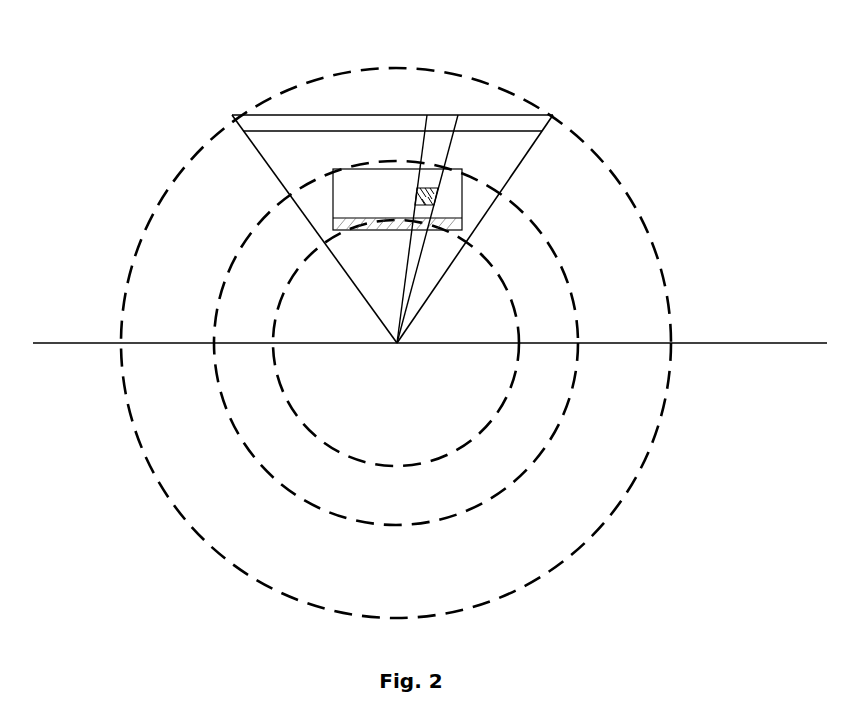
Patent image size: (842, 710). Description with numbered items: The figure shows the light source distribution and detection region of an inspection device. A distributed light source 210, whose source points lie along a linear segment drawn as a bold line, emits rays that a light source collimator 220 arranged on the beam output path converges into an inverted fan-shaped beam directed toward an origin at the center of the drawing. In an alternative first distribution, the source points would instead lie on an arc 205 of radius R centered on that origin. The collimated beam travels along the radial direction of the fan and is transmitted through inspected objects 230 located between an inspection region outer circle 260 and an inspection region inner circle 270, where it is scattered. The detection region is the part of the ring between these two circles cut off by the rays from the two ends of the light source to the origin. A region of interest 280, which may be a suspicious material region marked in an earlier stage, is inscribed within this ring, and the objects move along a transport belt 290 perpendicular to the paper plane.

The arc 205 is at (302, 80).
The distributed light source 210 is at (392, 103).
The light source collimator 220 is at (268, 132).
The inspected objects 230 is at (458, 156).
The inspection region outer circle 260 is at (275, 203).
The inspection region inner circle 270 is at (295, 273).
The region of interest 280 is at (415, 193).
The transport belt 290 is at (448, 230).